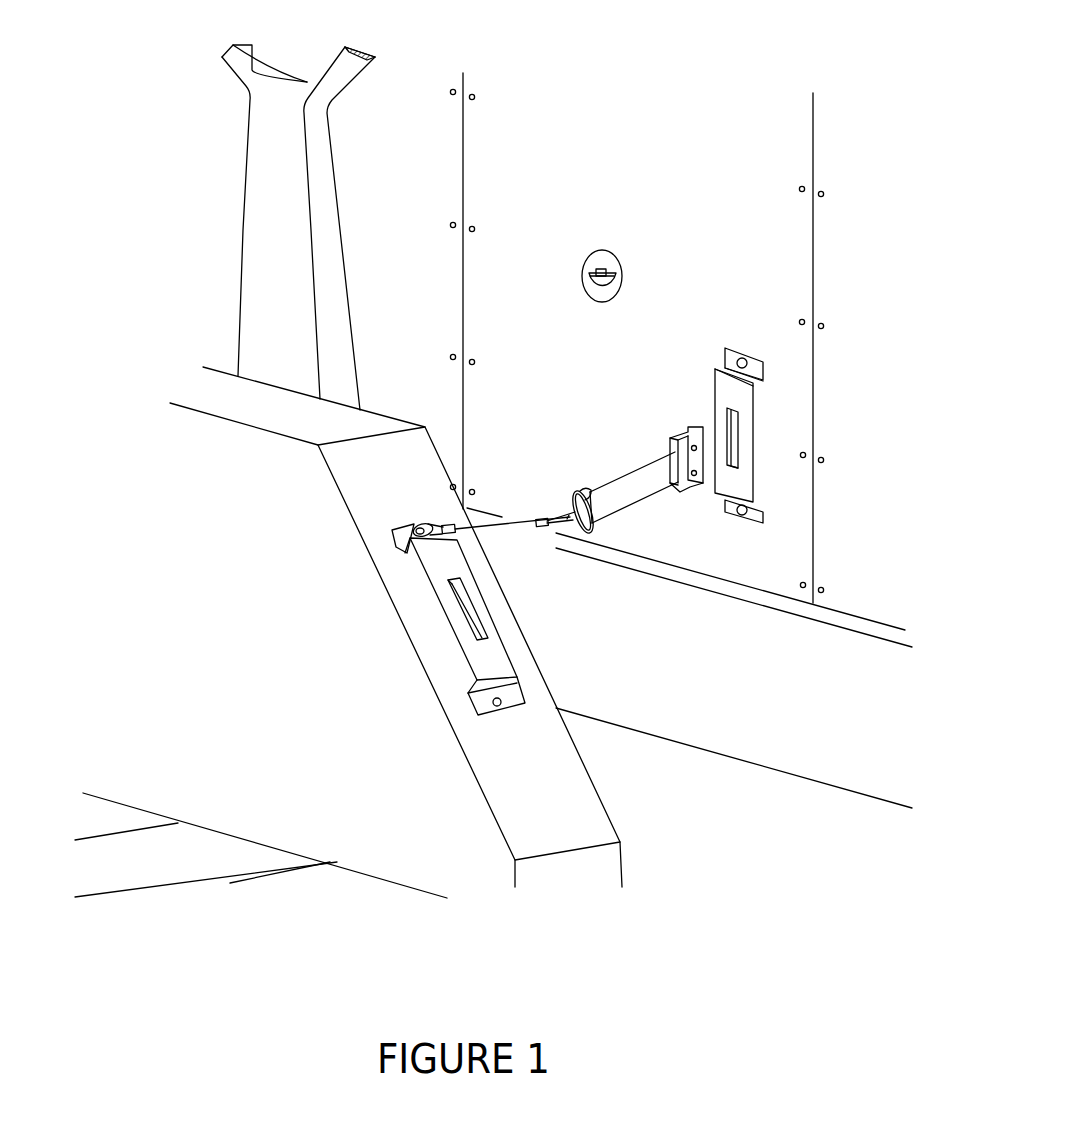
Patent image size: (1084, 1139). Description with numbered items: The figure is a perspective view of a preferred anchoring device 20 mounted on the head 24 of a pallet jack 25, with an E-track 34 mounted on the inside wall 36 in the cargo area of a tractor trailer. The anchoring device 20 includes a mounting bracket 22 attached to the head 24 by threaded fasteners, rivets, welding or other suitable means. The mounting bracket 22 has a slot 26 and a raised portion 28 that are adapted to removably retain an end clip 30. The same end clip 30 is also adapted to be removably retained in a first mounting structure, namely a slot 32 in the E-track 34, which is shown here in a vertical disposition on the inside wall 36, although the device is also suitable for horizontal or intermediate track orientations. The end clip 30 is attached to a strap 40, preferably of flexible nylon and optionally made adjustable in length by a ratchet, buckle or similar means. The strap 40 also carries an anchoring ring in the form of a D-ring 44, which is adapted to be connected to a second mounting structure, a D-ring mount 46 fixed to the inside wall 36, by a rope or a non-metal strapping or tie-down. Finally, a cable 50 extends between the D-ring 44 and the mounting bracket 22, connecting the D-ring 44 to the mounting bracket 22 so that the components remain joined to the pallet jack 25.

The anchoring device 20 is at (557, 473).
The mounting bracket 22 is at (440, 657).
The head 24 is at (522, 778).
The pallet jack 25 is at (392, 324).
The slot 26 is at (455, 590).
The raised portion 28 is at (493, 658).
The end clip 30 is at (697, 485).
The slot 32 is at (735, 445).
The E-track 34 is at (765, 366).
The inside wall 36 is at (628, 379).
The strap 40 is at (637, 483).
The D-ring 44 is at (578, 540).
The D-ring mount 46 is at (621, 272).
The cable 50 is at (497, 532).